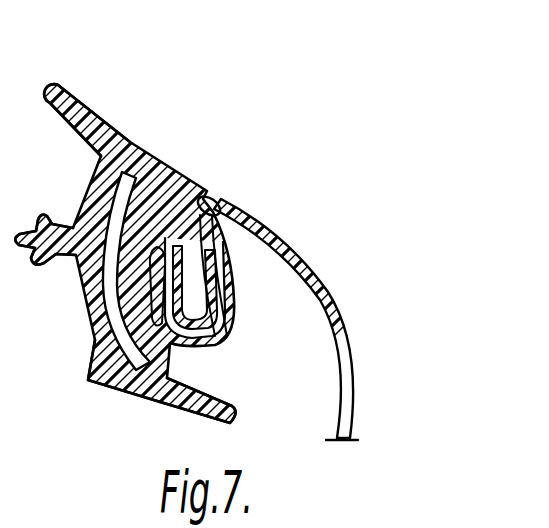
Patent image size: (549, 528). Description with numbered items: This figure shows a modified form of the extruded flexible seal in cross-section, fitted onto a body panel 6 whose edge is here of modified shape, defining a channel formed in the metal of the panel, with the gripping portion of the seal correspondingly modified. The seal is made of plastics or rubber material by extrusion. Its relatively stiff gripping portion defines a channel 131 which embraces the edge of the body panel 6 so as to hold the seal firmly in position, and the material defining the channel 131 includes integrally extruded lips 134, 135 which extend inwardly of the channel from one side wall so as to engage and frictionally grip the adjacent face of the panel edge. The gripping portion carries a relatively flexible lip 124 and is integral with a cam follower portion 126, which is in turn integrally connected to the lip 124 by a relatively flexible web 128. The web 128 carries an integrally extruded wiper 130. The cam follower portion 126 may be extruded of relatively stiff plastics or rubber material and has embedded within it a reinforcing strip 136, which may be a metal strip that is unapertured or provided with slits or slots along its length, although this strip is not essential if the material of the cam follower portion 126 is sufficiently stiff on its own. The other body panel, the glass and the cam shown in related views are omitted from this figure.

The body panel 6 is at (320, 283).
The lip 124 is at (84, 112).
The cam follower portion 126 is at (236, 420).
The web 128 is at (100, 337).
The wiper 130 is at (30, 262).
The channel 131 is at (212, 262).
The lip 134 is at (221, 213).
The lip 135 is at (212, 305).
The reinforcing strip 136 is at (148, 404).